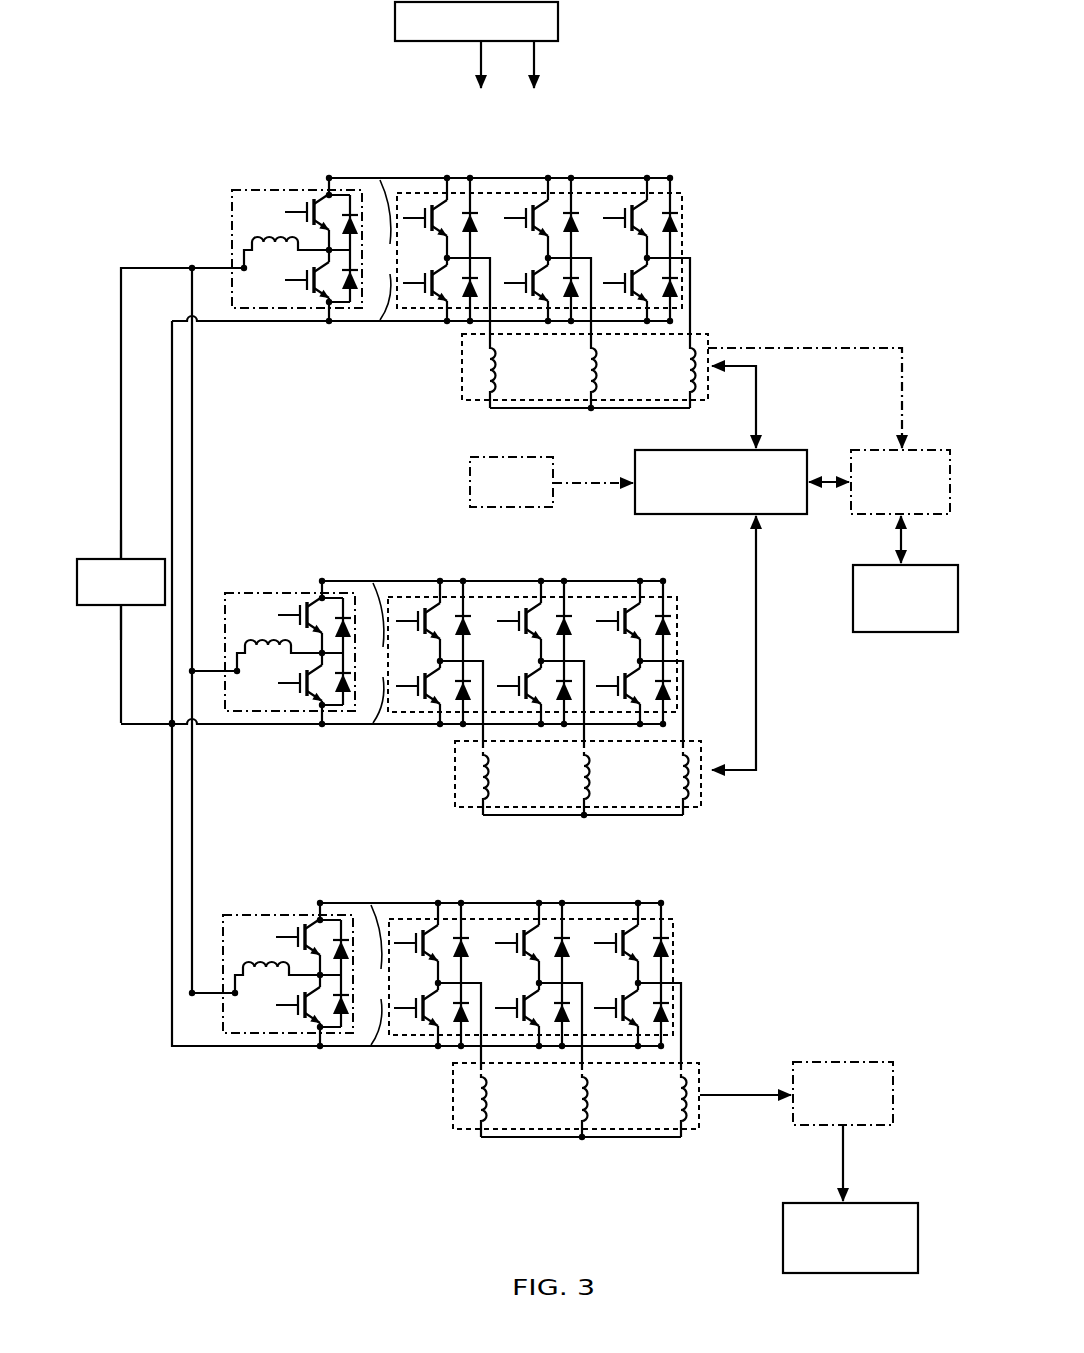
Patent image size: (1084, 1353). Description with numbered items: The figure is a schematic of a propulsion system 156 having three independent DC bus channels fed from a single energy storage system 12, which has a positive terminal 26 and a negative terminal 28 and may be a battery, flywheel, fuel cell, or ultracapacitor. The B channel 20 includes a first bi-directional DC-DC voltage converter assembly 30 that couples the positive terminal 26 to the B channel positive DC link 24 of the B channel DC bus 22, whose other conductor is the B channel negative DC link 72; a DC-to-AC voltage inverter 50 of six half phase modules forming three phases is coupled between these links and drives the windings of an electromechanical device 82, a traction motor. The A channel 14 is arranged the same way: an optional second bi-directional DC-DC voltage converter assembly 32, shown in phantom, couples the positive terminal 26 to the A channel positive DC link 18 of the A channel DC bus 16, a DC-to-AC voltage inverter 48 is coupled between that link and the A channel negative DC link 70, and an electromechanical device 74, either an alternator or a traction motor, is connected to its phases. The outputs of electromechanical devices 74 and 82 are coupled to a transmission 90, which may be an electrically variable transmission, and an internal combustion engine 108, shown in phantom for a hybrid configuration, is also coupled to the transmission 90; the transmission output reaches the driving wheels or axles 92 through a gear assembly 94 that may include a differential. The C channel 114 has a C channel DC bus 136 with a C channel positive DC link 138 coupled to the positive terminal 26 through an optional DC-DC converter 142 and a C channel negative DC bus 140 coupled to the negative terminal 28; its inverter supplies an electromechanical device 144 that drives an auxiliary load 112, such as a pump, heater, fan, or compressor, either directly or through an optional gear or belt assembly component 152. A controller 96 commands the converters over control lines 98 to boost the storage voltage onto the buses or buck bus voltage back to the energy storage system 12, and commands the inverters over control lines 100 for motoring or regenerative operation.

The propulsion system 156 is at (108, 94).
The energy storage system 12 is at (77, 582).
The positive terminal 26 is at (120, 555).
The negative terminal 28 is at (122, 607).
The controller 96 is at (395, 27).
The control lines 98 is at (487, 63).
The control lines 100 is at (528, 63).
The B channel 20 is at (445, 252).
The first bi-directional DC-DC voltage converter assembly 30 is at (297, 241).
The B channel positive DC link 24 is at (499, 161).
The B channel DC bus 22 is at (382, 250).
The B channel negative DC link 72 is at (421, 339).
The DC-to-AC voltage inverter 50 is at (557, 260).
The electromechanical device 82 is at (570, 372).
The A channel 14 is at (414, 642).
The second bi-directional DC-DC voltage converter assembly 32 is at (290, 643).
The A channel positive DC link 18 is at (492, 567).
The A channel DC bus 16 is at (373, 653).
The A channel negative DC link 70 is at (392, 738).
The DC-to-AC voltage inverter 48 is at (548, 663).
The electromechanical device 74 is at (563, 779).
The C channel 114 is at (426, 966).
The DC-DC converter 142 is at (288, 967).
The C channel positive DC link 138 is at (490, 888).
The C channel DC bus 136 is at (370, 975).
The C channel negative DC bus 140 is at (416, 1064).
The electromechanical device 144 is at (555, 1101).
The internal combustion engine 108 is at (470, 482).
The transmission 90 is at (647, 515).
The gear assembly 94 is at (924, 450).
The driving wheels or axles 92 is at (861, 633).
The gear or belt assembly component 152 is at (811, 1062).
The auxiliary load 112 is at (805, 1274).